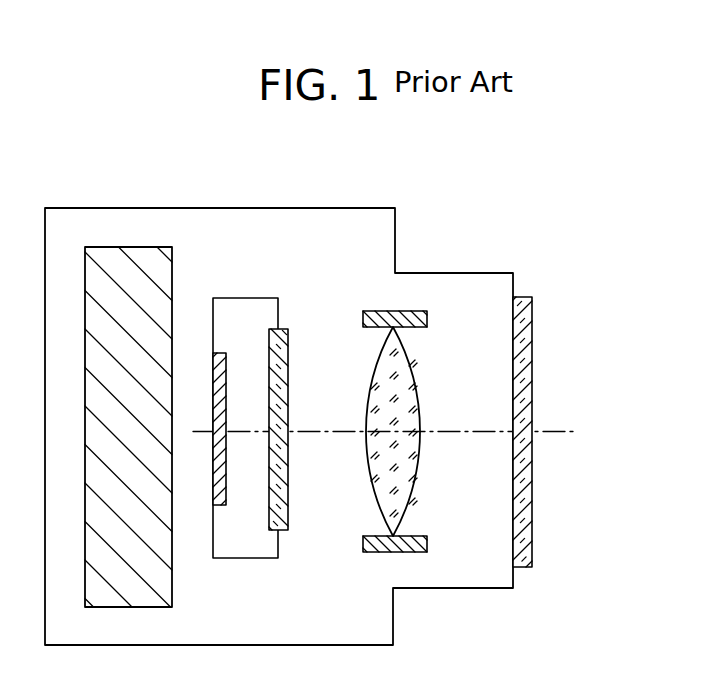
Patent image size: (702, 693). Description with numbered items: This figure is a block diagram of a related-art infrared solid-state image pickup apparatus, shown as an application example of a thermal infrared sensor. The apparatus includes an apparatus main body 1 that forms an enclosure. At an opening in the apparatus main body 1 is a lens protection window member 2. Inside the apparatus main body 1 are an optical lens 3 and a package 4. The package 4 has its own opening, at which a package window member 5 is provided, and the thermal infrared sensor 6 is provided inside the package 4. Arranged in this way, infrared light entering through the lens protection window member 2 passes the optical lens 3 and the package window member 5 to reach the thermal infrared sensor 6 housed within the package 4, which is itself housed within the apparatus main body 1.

The apparatus main body 1 is at (103, 208).
The lens protection window member 2 is at (533, 373).
The optical lens 3 is at (419, 372).
The package 4 is at (245, 298).
The package window member 5 is at (291, 397).
The thermal infrared sensor 6 is at (226, 406).